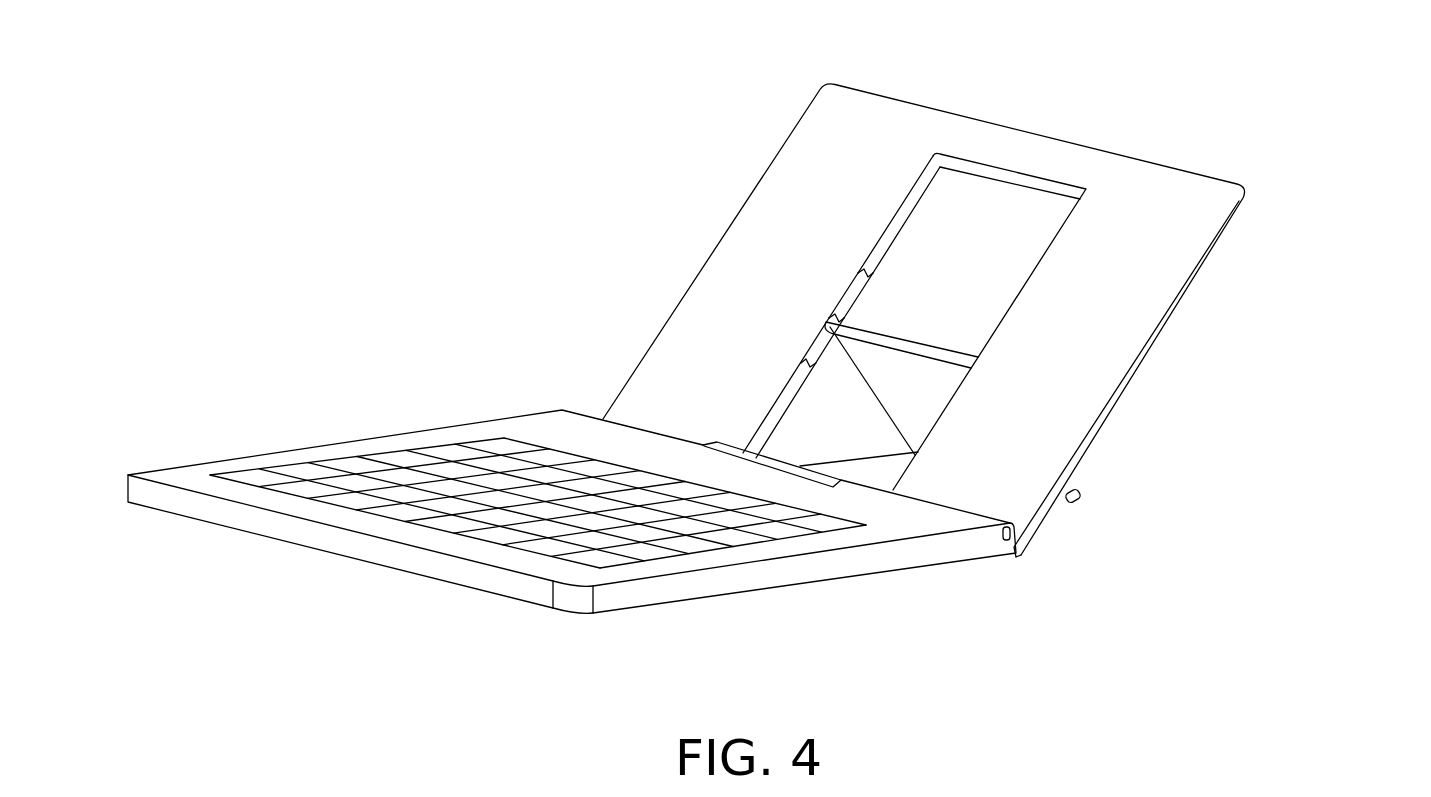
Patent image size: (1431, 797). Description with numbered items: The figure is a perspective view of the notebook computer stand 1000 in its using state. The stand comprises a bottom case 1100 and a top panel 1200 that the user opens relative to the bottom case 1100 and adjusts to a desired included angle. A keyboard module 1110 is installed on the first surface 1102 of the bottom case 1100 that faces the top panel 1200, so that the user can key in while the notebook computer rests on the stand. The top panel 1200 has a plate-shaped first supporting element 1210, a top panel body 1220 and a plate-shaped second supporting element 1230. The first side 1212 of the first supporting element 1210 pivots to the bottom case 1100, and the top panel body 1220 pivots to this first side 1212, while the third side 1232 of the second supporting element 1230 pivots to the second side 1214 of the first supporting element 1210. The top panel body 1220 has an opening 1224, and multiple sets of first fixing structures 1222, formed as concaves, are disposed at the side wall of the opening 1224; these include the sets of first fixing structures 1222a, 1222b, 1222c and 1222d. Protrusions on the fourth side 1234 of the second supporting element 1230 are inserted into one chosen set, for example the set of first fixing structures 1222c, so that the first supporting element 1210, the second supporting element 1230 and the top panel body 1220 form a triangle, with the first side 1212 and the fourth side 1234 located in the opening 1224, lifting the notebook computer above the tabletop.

The notebook computer stand 1000 is at (1305, 703).
The bottom case 1100 is at (893, 562).
The first surface 1102 is at (192, 468).
The keyboard module 1110 is at (480, 537).
The top panel 1200 is at (1278, 157).
The first supporting element 1210 is at (852, 463).
The first side 1212 is at (810, 464).
The second side 1214 is at (1063, 504).
The top panel body 1220 is at (1158, 265).
The first fixing structures 1222 is at (851, 269).
The first fixing structure 1222a is at (942, 175).
The set of first fixing structures 1222b is at (858, 273).
The set of first fixing structures 1222c is at (828, 318).
The set of first fixing structures 1222d is at (800, 363).
The opening 1224 is at (1037, 196).
The second supporting element 1230 is at (1278, 347).
The third side 1232 is at (1072, 485).
The fourth side 1234 is at (933, 350).